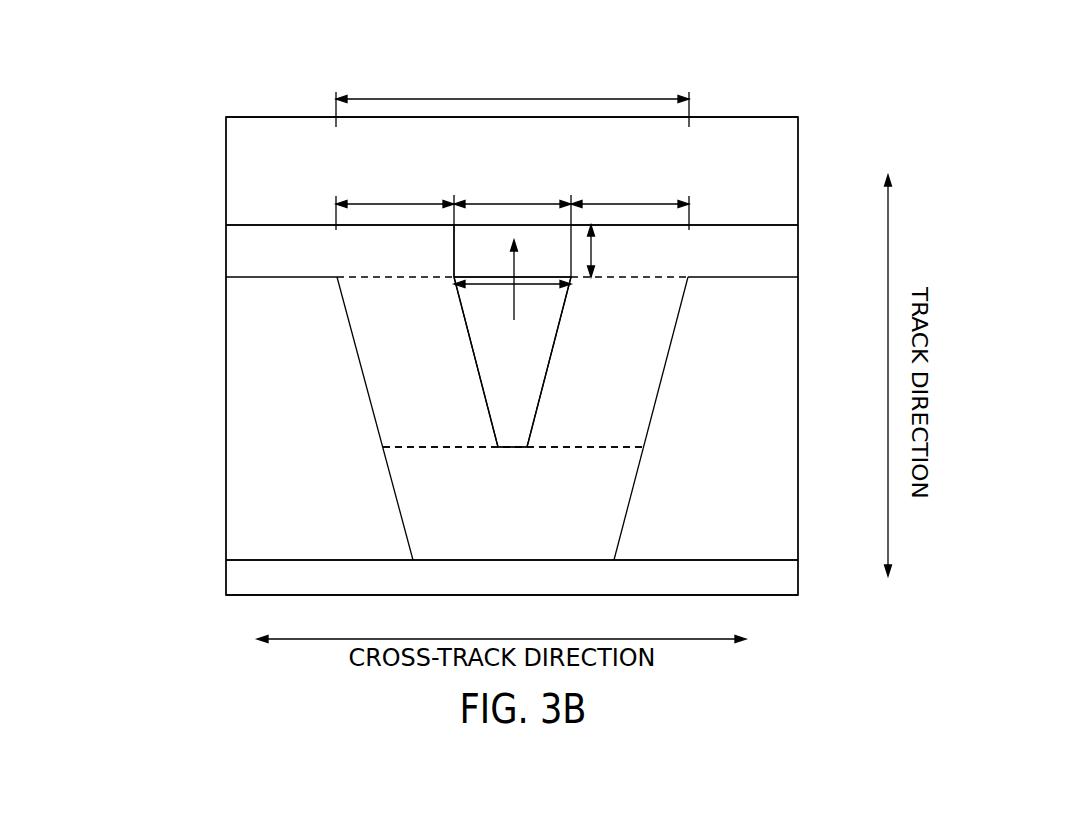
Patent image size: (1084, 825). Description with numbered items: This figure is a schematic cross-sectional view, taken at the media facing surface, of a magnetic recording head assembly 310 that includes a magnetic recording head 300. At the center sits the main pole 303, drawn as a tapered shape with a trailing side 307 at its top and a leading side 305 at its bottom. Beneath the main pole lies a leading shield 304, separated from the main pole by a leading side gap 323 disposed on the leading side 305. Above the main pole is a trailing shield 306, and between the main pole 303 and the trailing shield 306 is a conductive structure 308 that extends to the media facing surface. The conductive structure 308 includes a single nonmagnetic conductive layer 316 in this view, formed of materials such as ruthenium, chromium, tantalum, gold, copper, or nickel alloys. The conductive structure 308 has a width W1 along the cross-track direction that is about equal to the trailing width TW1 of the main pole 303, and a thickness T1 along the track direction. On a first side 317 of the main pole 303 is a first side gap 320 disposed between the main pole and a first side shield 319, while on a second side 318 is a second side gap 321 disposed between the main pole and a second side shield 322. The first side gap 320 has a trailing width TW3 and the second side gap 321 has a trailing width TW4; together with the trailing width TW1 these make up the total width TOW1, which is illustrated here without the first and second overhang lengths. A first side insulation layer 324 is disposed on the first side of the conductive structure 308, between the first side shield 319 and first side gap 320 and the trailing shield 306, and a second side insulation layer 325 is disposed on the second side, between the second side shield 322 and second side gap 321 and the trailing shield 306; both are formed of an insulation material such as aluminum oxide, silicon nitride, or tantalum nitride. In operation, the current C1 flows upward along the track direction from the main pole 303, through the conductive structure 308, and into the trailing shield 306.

The magnetic recording head 300 is at (210, 155).
The magnetic recording head assembly 310 is at (172, 75).
The main pole 303 is at (492, 380).
The leading shield 304 is at (625, 590).
The leading side 305 is at (508, 453).
The trailing shield 306 is at (462, 146).
The trailing side 307 is at (528, 268).
The conductive structure 308 is at (453, 237).
The conductive layer 316 is at (460, 260).
The first side 317 is at (561, 344).
The second side 318 is at (463, 343).
The first side shield 319 is at (723, 437).
The first side gap 320 is at (583, 410).
The second side gap 321 is at (407, 410).
The second side shield 322 is at (268, 436).
The leading side gap 323 is at (495, 518).
The first side insulation layer 324 is at (670, 260).
The second side insulation layer 325 is at (298, 260).
The total width TOW1 is at (513, 93).
The trailing width of the second side gap TW4 is at (392, 203).
The width of the conductive structure W1 is at (503, 203).
The trailing width of the first side gap TW3 is at (643, 203).
The thickness of the conductive structure T1 is at (591, 250).
The trailing width of the main pole TW1 is at (482, 289).
The current C1 is at (514, 305).